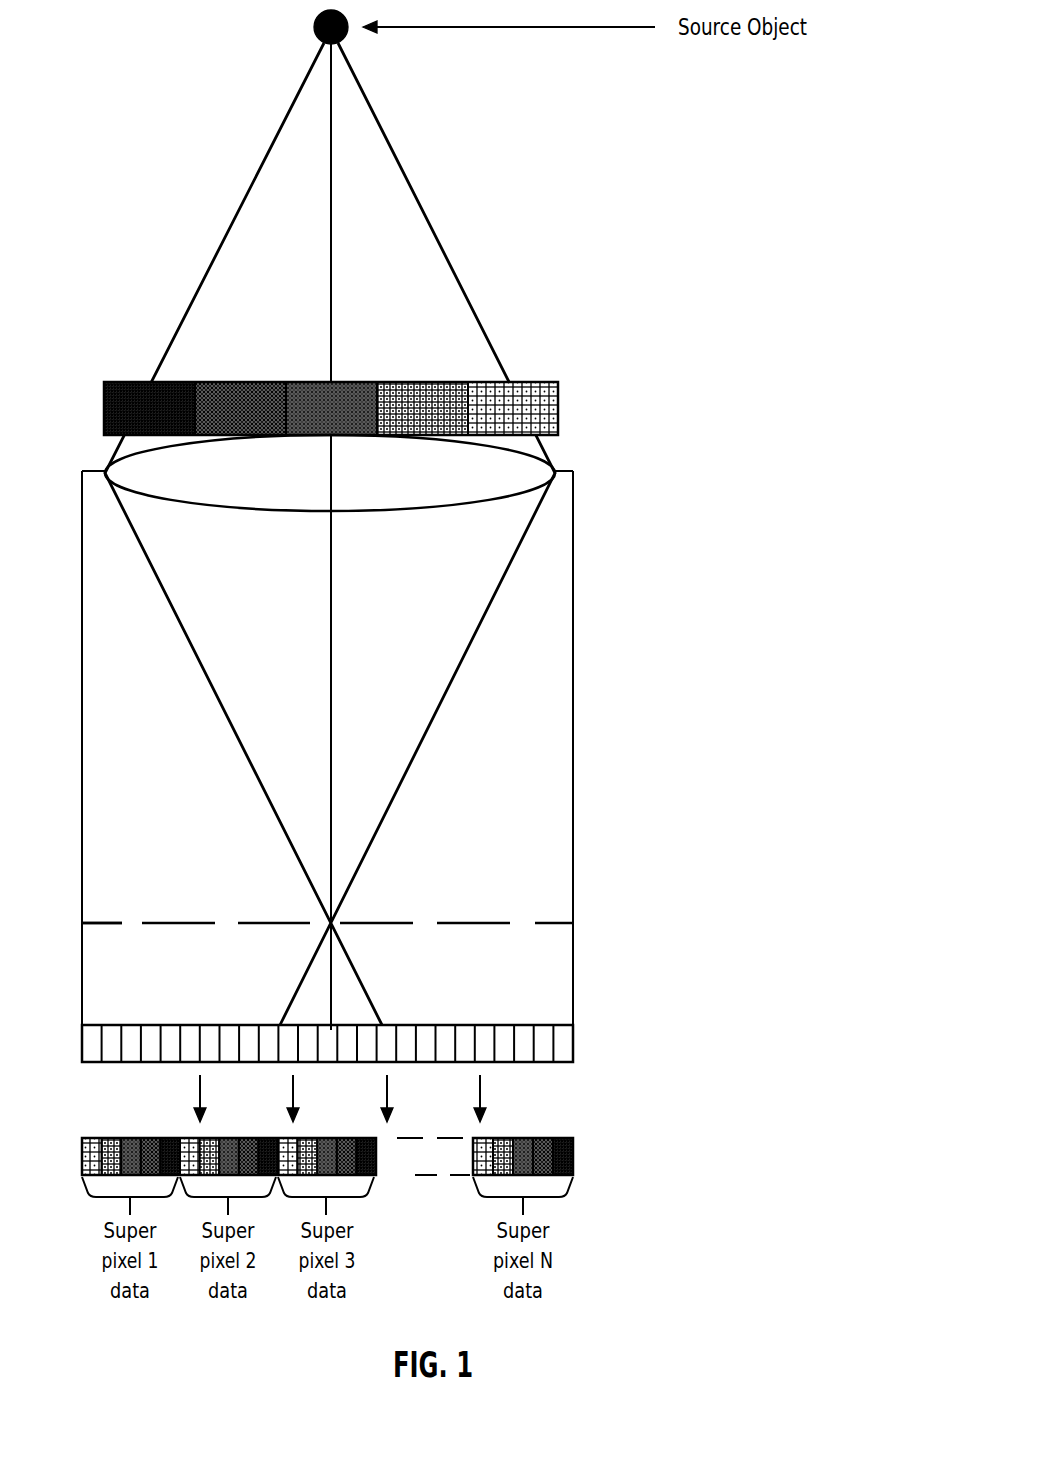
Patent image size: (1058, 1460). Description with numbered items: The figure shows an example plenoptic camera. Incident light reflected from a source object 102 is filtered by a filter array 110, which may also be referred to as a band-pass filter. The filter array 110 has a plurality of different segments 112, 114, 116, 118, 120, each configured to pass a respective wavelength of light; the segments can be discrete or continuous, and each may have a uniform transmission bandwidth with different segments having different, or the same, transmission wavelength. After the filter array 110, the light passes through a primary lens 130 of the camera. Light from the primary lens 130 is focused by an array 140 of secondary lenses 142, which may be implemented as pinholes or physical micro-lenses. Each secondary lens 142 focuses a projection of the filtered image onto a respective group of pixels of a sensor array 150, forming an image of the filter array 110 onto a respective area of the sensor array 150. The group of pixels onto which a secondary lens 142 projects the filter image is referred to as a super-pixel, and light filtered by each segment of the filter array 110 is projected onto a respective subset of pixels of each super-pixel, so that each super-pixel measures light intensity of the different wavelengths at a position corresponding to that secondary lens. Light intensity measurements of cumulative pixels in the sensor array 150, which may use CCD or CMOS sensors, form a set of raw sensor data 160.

The source object 102 is at (313, 25).
The filter array 110 is at (562, 409).
The segment 112 is at (168, 382).
The segment 114 is at (253, 382).
The segment 116 is at (363, 382).
The segment 118 is at (460, 382).
The segment 120 is at (535, 382).
The primary lens 130 is at (577, 472).
The array of secondary lenses 140 is at (575, 923).
The secondary lens 142 is at (135, 912).
The sensor array 150 is at (575, 1043).
The raw sensor data 160 is at (575, 1152).